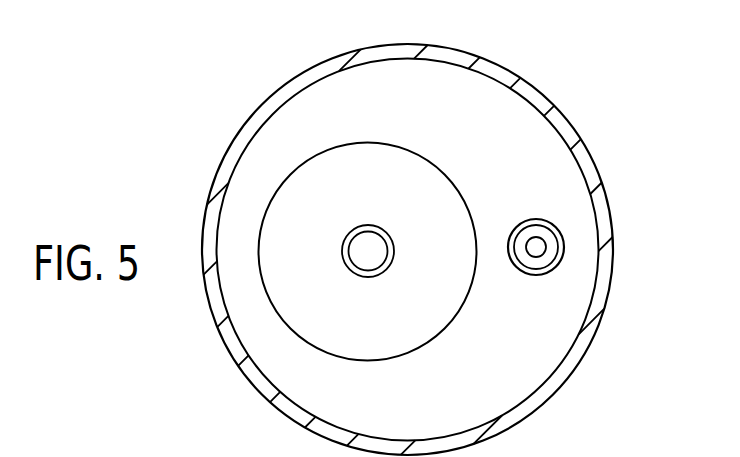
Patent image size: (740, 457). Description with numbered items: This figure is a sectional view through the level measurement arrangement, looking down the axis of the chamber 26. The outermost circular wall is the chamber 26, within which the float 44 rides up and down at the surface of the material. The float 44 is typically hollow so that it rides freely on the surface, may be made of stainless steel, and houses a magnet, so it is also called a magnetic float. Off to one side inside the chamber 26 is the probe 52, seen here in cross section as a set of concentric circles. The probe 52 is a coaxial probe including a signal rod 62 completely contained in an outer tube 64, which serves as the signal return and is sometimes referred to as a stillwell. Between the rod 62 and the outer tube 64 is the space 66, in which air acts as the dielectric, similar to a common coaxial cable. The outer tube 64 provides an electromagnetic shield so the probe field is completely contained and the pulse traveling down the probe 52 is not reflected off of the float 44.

The chamber 26 is at (545, 82).
The float 44 is at (417, 153).
The probe 52 is at (570, 210).
The signal rod 62 is at (554, 215).
The outer tube 64 is at (563, 233).
The space 66 is at (549, 256).